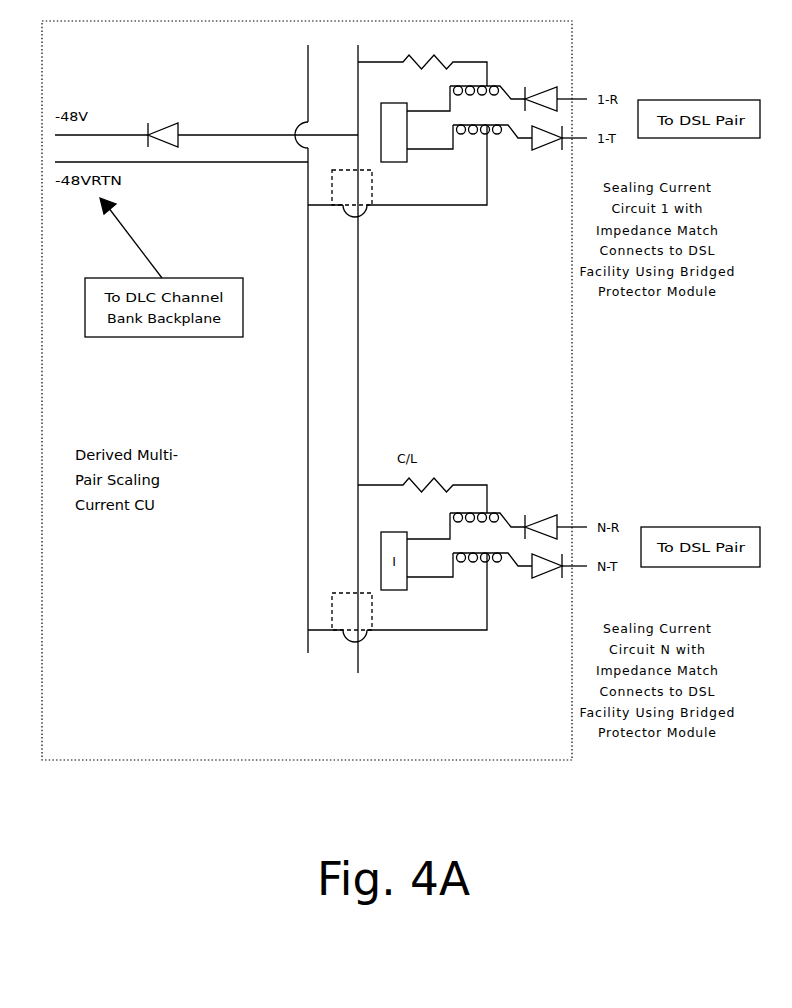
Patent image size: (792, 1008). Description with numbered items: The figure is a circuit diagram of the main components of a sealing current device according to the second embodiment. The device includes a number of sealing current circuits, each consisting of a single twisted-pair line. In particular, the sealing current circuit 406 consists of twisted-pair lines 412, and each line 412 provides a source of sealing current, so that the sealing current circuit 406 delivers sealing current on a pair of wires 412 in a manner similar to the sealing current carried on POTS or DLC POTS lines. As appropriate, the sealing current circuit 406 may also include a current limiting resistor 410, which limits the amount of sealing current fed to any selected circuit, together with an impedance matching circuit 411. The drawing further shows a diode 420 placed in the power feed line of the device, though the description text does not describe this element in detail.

The sealing current circuit 406 is at (535, 400).
The current limiting resistor 410 is at (420, 125).
The impedance matching circuit 411 is at (365, 400).
The twisted-pair lines 412 is at (564, 335).
The diode 420 is at (159, 115).